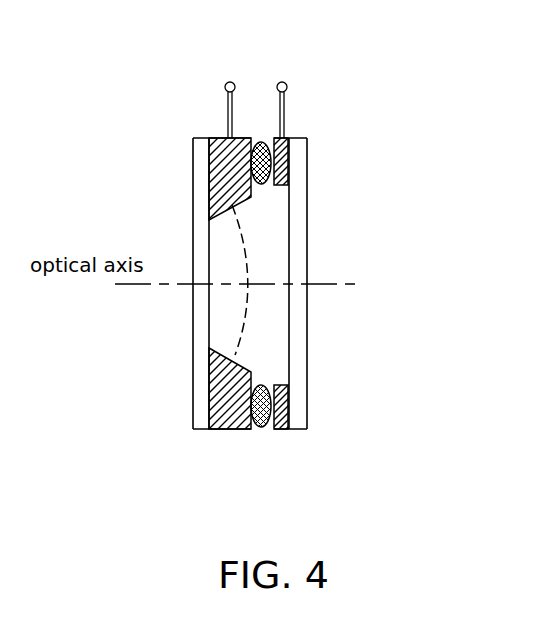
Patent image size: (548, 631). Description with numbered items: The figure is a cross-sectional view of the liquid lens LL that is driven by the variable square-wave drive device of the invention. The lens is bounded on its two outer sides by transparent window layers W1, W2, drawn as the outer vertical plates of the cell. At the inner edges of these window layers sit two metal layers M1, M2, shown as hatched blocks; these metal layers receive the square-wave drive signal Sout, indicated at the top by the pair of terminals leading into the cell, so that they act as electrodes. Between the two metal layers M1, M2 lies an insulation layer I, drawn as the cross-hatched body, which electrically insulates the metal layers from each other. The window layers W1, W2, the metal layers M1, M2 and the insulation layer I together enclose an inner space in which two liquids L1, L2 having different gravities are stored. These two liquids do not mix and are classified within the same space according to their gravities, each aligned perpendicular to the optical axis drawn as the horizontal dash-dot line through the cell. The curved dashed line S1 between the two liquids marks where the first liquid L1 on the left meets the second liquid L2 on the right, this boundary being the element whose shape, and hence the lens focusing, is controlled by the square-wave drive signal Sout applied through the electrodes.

The liquid lens LL is at (130, 24).
The square-wave drive signal Sout is at (283, 70).
The transparent window layer W1 is at (194, 431).
The transparent window layer W2 is at (306, 431).
The metal layer M1 is at (228, 431).
The metal layer M2 is at (282, 431).
The insulation layer I is at (262, 431).
The interface between liquids S1 is at (262, 327).
The liquid L1 is at (217, 243).
The liquid L2 is at (278, 235).